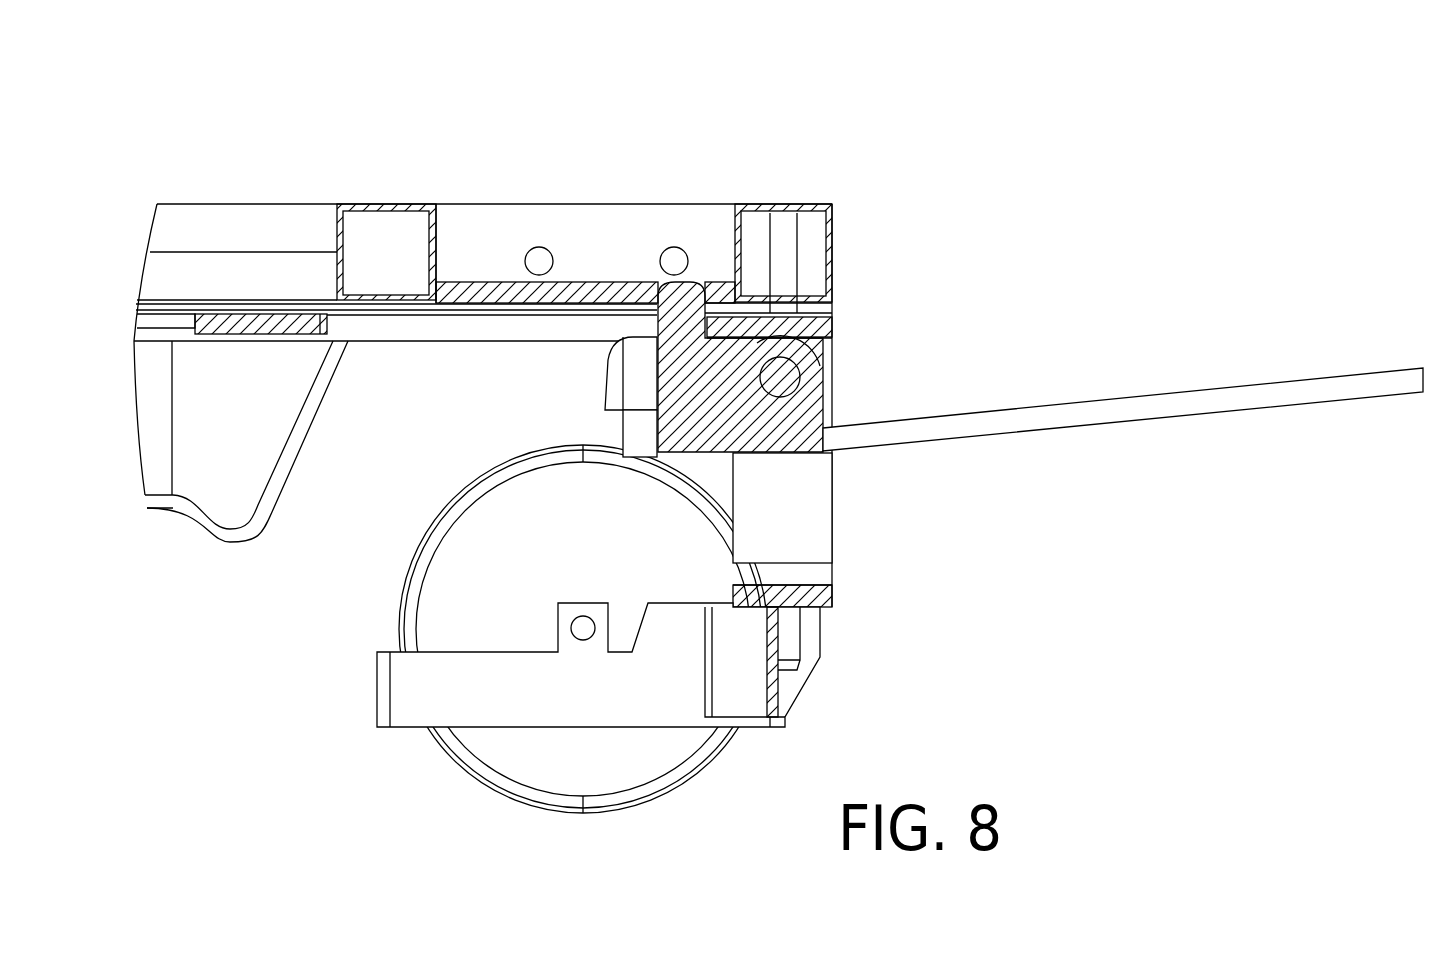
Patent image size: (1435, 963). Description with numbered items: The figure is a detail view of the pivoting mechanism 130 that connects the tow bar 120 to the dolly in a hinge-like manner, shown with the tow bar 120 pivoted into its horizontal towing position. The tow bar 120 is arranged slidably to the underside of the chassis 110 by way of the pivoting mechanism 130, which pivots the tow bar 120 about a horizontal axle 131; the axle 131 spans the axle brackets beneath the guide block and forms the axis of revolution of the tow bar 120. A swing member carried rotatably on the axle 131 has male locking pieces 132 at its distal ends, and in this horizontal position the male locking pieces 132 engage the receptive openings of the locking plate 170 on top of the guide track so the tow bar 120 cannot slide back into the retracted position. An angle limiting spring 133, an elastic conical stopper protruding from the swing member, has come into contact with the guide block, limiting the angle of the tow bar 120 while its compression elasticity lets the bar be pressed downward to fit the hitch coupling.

The chassis 110 is at (388, 206).
The locking plate 170 is at (478, 286).
The male locking piece 132 is at (688, 286).
The axle 131 is at (783, 382).
The angle limiting spring 133 is at (622, 392).
The pivoting mechanism 130 is at (837, 400).
The tow bar 120 is at (1348, 370).